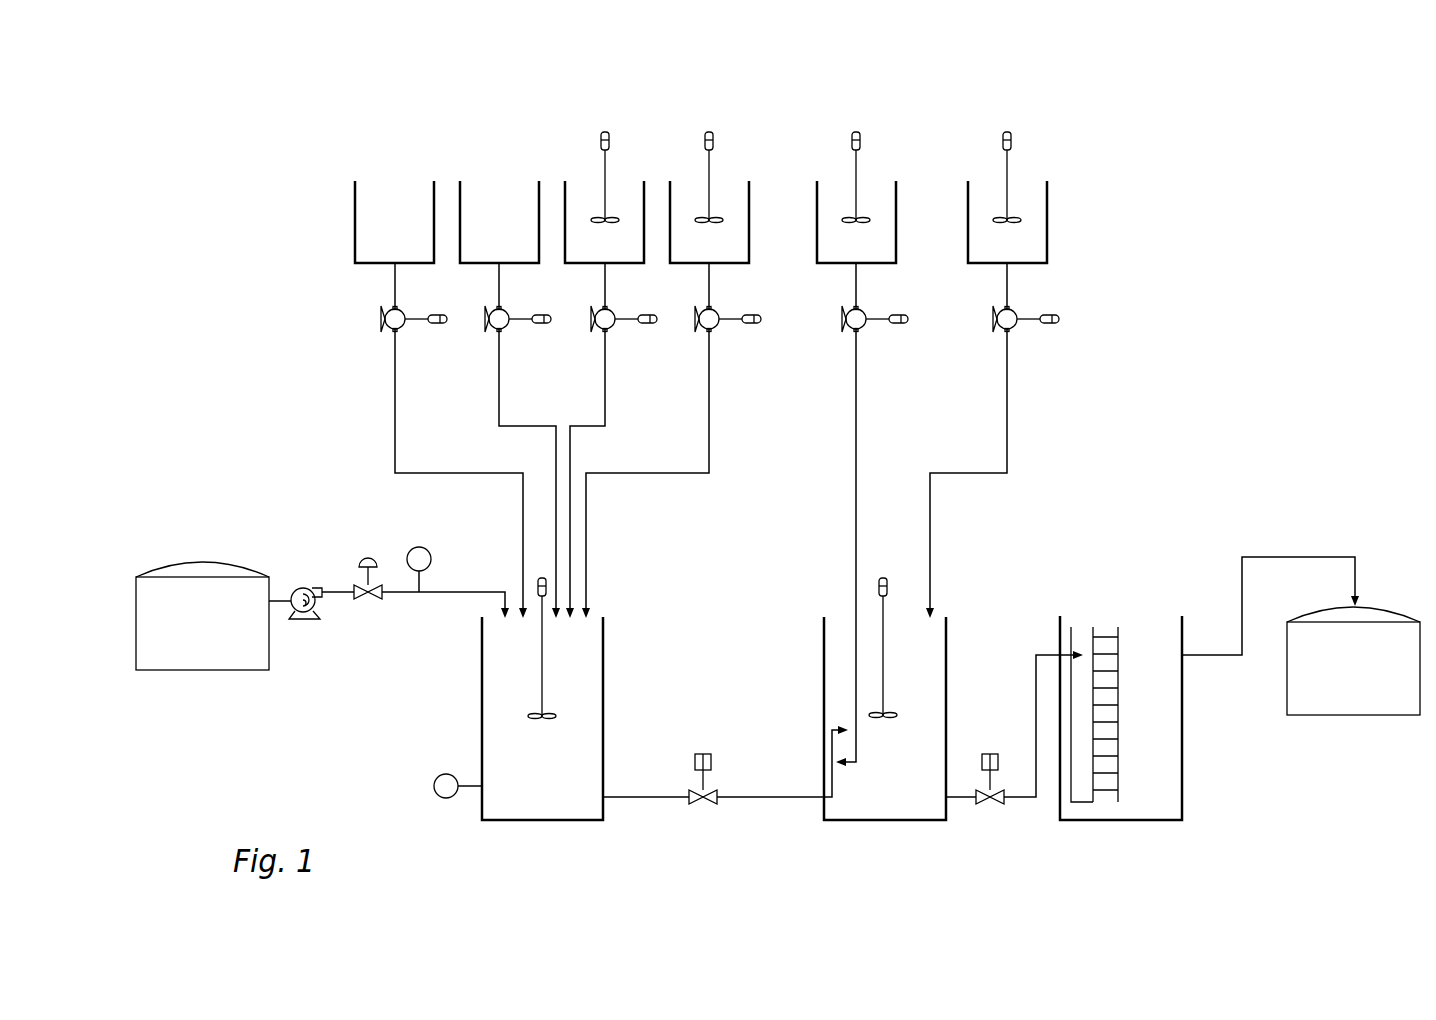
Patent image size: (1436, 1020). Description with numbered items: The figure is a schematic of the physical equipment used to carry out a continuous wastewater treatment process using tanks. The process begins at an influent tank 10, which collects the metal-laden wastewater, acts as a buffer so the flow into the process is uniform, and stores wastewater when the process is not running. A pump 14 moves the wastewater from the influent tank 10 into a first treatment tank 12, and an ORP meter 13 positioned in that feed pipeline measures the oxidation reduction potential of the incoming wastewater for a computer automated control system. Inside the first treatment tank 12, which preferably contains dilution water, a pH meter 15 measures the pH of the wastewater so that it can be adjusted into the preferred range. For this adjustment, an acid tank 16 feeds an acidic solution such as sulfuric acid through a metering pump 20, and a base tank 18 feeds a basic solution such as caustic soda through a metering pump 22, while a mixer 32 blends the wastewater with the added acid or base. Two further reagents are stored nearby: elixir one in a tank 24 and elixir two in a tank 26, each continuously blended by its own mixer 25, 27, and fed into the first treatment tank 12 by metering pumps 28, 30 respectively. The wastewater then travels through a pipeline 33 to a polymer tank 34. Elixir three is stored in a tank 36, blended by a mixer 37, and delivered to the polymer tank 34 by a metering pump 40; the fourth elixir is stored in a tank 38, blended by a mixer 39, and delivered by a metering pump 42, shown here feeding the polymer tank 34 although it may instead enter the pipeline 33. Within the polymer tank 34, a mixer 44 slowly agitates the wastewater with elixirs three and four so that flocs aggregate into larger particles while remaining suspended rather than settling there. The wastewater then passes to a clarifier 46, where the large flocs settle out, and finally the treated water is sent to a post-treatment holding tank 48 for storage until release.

The influent tank 10 is at (192, 636).
The first treatment tank 12 is at (605, 641).
The ORP meter 13 is at (417, 546).
The pump 14 is at (306, 588).
The pH meter 15 is at (436, 777).
The acid tank 16 is at (387, 238).
The base tank 18 is at (490, 238).
The metering pump 20 is at (400, 331).
The metering pump 22 is at (504, 331).
The tank 24 is at (595, 249).
The mixer 25 is at (611, 216).
The tank 26 is at (699, 249).
The mixer 27 is at (715, 216).
The metering pump 28 is at (609, 331).
The metering pump 30 is at (714, 331).
The mixer 32 is at (550, 720).
The pipeline 33 is at (783, 795).
The polymer tank 34 is at (823, 683).
The tank 36 is at (846, 249).
The mixer 37 is at (864, 216).
The tank 38 is at (997, 249).
The mixer 39 is at (1013, 216).
The metering pump 40 is at (861, 331).
The metering pump 42 is at (1012, 331).
The mixer 44 is at (886, 718).
The clarifier 46 is at (1133, 771).
The post-treatment holding tank 48 is at (1343, 682).